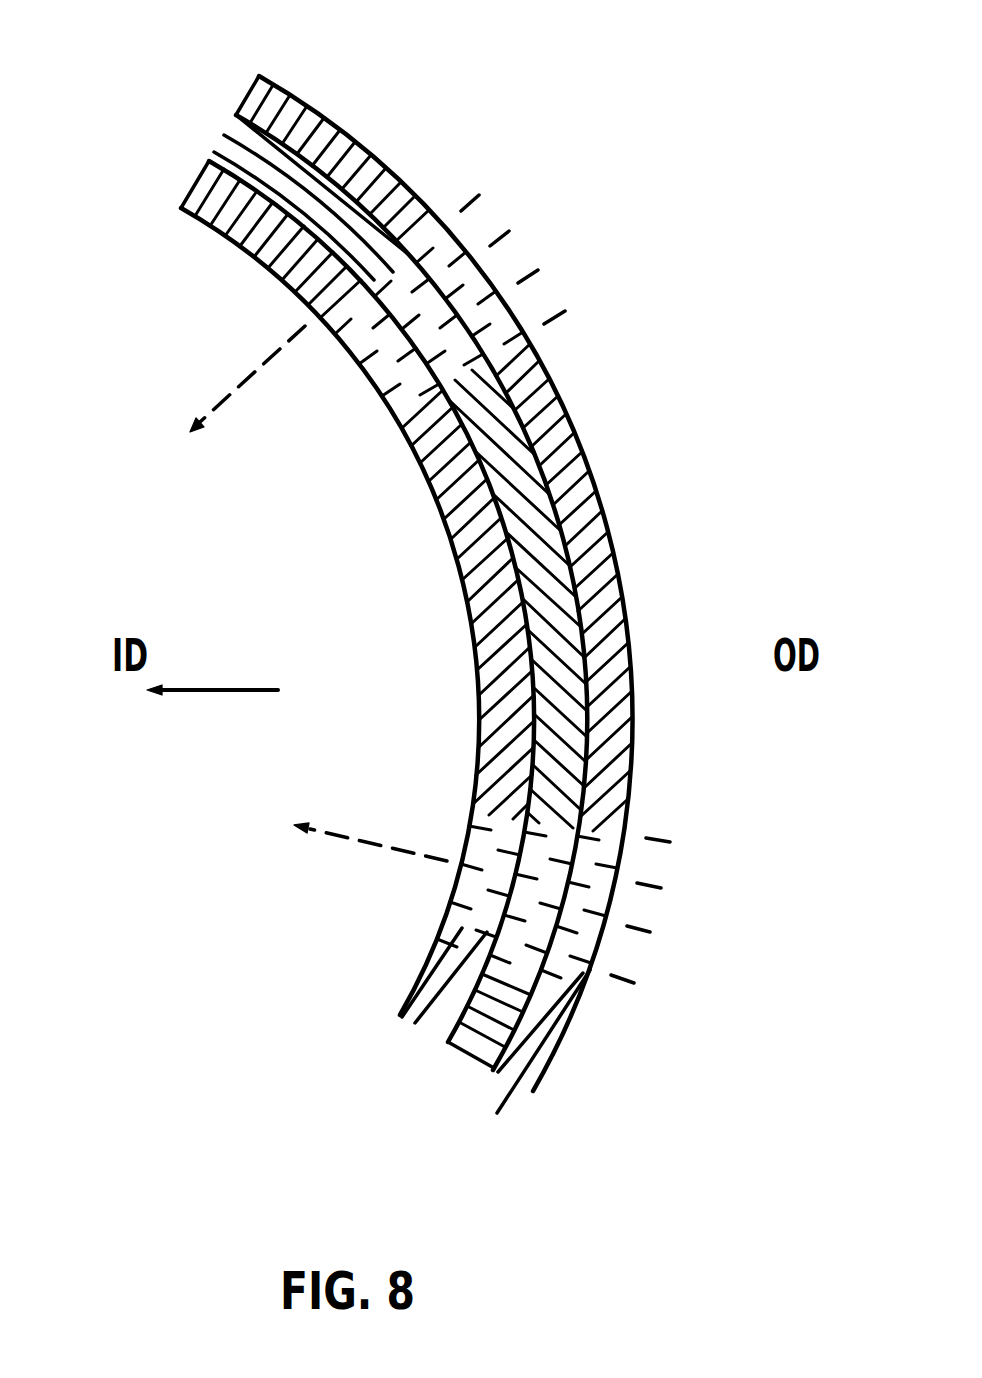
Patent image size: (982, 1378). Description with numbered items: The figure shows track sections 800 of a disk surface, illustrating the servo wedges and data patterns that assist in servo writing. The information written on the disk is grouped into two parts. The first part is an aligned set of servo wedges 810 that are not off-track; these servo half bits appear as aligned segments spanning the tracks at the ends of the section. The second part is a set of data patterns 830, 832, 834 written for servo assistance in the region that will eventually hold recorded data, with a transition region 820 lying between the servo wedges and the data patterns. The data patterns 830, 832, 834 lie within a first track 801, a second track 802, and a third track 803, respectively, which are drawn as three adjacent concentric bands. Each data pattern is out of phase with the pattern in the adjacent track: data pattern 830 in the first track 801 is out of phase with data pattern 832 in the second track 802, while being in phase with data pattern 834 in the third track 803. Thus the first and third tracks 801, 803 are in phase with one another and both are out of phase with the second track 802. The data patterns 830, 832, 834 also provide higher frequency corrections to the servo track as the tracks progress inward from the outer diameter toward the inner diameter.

The multilayer belt structure 800 is at (548, 64).
The first track 801 is at (513, 1085).
The second track 802 is at (472, 1056).
The third track 803 is at (440, 1025).
The servo wedges 810 is at (488, 190).
The transition region 820 is at (543, 337).
The data pattern 830 is at (556, 484).
The data pattern 832 is at (548, 538).
The data pattern 834 is at (480, 505).